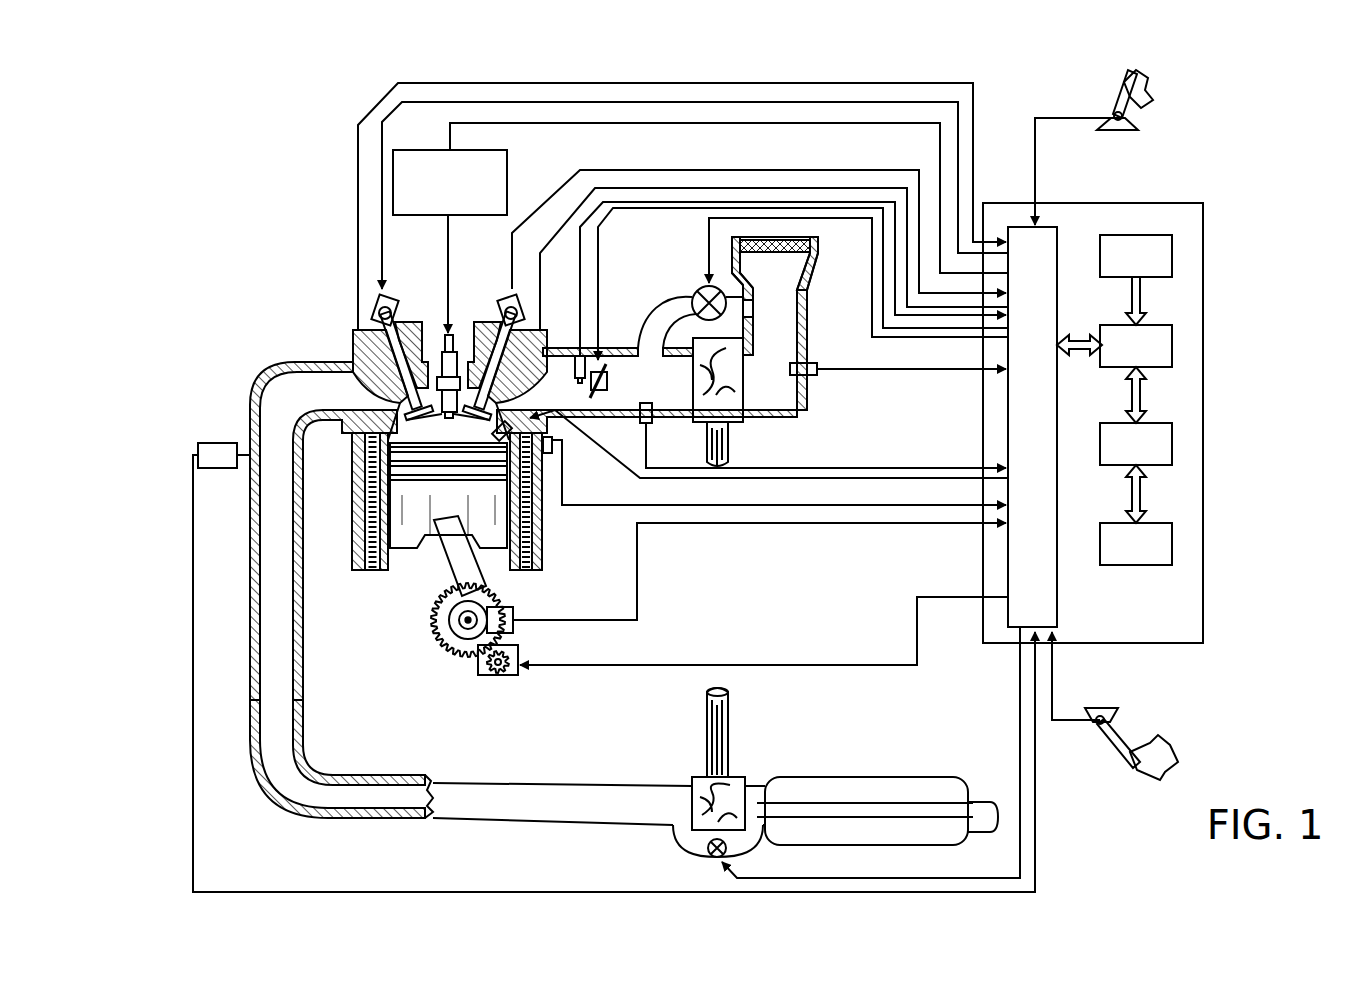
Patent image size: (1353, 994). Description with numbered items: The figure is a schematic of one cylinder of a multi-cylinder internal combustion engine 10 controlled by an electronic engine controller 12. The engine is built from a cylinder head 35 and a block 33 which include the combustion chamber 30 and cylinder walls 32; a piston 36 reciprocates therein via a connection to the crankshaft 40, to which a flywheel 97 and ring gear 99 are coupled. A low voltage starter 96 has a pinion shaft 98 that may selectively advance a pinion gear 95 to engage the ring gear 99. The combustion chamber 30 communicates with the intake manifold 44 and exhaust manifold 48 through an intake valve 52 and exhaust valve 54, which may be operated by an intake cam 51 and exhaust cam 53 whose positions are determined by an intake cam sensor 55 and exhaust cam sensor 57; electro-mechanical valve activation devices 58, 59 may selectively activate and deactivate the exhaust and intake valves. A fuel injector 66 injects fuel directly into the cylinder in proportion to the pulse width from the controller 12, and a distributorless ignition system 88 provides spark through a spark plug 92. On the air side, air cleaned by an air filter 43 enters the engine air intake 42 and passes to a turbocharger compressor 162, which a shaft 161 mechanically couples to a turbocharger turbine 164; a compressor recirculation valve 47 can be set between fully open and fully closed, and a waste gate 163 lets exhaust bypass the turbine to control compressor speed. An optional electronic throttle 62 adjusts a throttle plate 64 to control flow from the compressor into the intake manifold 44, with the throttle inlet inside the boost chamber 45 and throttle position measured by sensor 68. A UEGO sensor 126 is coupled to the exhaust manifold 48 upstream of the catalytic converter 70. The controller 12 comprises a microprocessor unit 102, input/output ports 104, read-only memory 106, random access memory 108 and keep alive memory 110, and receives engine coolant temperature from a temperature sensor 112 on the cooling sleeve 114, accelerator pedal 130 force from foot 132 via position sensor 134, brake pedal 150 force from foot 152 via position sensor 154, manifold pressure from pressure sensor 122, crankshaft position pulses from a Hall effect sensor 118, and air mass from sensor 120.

The internal combustion engine 10 is at (290, 281).
The electronic engine controller 12 is at (1203, 204).
The combustion chamber 30 is at (447, 422).
The cylinder walls 32 is at (395, 568).
The block 33 is at (348, 466).
The cylinder head 35 is at (346, 331).
The piston 36 is at (433, 523).
The crankshaft 40 is at (460, 643).
The engine air intake 42 is at (654, 257).
The air filter 43 is at (788, 253).
The intake manifold 44 is at (618, 371).
The boost chamber 45 is at (655, 383).
The compressor recirculation valve 47 is at (705, 286).
The exhaust manifold 48 is at (322, 390).
The intake cam 51 is at (507, 305).
The intake valve 52 is at (492, 392).
The exhaust cam 53 is at (390, 298).
The exhaust valve 54 is at (352, 378).
The intake cam sensor 55 is at (520, 312).
The exhaust cam sensor 57 is at (372, 315).
The valve activation device 58 is at (397, 312).
The valve activation device 59 is at (499, 326).
The electronic throttle 62 is at (607, 381).
The throttle plate 64 is at (600, 396).
The fuel injector 66 is at (552, 444).
The throttle position sensor 68 is at (578, 360).
The catalytic converter 70 is at (806, 777).
The distributorless ignition system 88 is at (407, 150).
The spark plug 92 is at (462, 340).
The pinion gear 95 is at (505, 674).
The starter 96 is at (517, 676).
The flywheel 97 is at (443, 619).
The pinion shaft 98 is at (490, 672).
The ring gear 99 is at (465, 657).
The microprocessor unit 102 is at (1172, 348).
The input/output ports 104 is at (1057, 232).
The read-only memory 106 is at (1172, 253).
The random access memory 108 is at (1172, 447).
The keep alive memory 110 is at (1172, 546).
The temperature sensor 112 is at (774, 471).
The cooling sleeve 114 is at (527, 523).
The Hall effect sensor 118 is at (514, 608).
The air mass sensor 120 is at (816, 365).
The pressure sensor 122 is at (646, 424).
The Universal Exhaust Gas Oxygen sensor 126 is at (200, 447).
The accelerator pedal 130 is at (1094, 92).
The foot 132 is at (1145, 80).
The position sensor 134 is at (1133, 118).
The brake pedal 150 is at (1123, 760).
The foot 152 is at (1160, 737).
The position sensor 154 is at (1090, 712).
The shaft 161 is at (706, 433).
The turbocharger compressor 162 is at (735, 408).
The waste gate 163 is at (712, 860).
The turbocharger turbine 164 is at (697, 776).